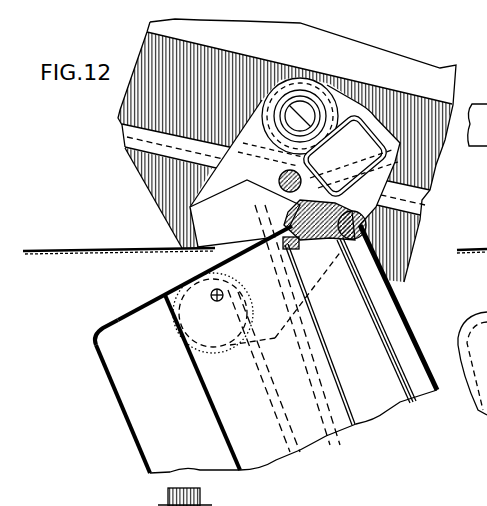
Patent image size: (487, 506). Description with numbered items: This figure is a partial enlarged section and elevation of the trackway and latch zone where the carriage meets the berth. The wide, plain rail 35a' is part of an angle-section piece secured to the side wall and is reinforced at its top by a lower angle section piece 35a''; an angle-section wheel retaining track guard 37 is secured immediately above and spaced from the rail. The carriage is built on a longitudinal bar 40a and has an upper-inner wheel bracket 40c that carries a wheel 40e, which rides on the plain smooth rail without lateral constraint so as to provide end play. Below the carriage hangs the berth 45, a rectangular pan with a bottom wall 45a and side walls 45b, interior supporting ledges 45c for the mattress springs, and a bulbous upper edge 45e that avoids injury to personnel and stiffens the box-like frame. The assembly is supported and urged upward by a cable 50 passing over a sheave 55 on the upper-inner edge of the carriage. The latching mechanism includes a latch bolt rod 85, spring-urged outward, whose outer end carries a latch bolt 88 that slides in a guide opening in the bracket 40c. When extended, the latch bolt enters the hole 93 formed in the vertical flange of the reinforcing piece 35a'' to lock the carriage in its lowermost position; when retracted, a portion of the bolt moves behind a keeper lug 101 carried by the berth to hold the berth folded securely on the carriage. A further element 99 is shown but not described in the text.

The rail 35a' is at (112, 84).
The lower angle section piece 35a'' is at (264, 192).
The wheel retaining track guard 37 is at (391, 98).
The longitudinal bar 40a is at (364, 128).
The upper-inner wheel bracket 40c is at (347, 105).
The wheel 40e is at (290, 67).
The berth 45 is at (130, 441).
The bottom wall 45a is at (113, 388).
The side wall 45b is at (118, 316).
The interior supporting ledge 45c is at (200, 388).
The bulbous upper edge 45e is at (410, 321).
The cable 50 is at (87, 251).
The sheave 55 is at (177, 286).
The latch bolt rod 85 is at (272, 183).
The latch bolt 88 is at (283, 226).
The hole 93 is at (352, 156).
The fastening bolt 99 is at (204, 505).
The keeper lug 101 is at (332, 205).